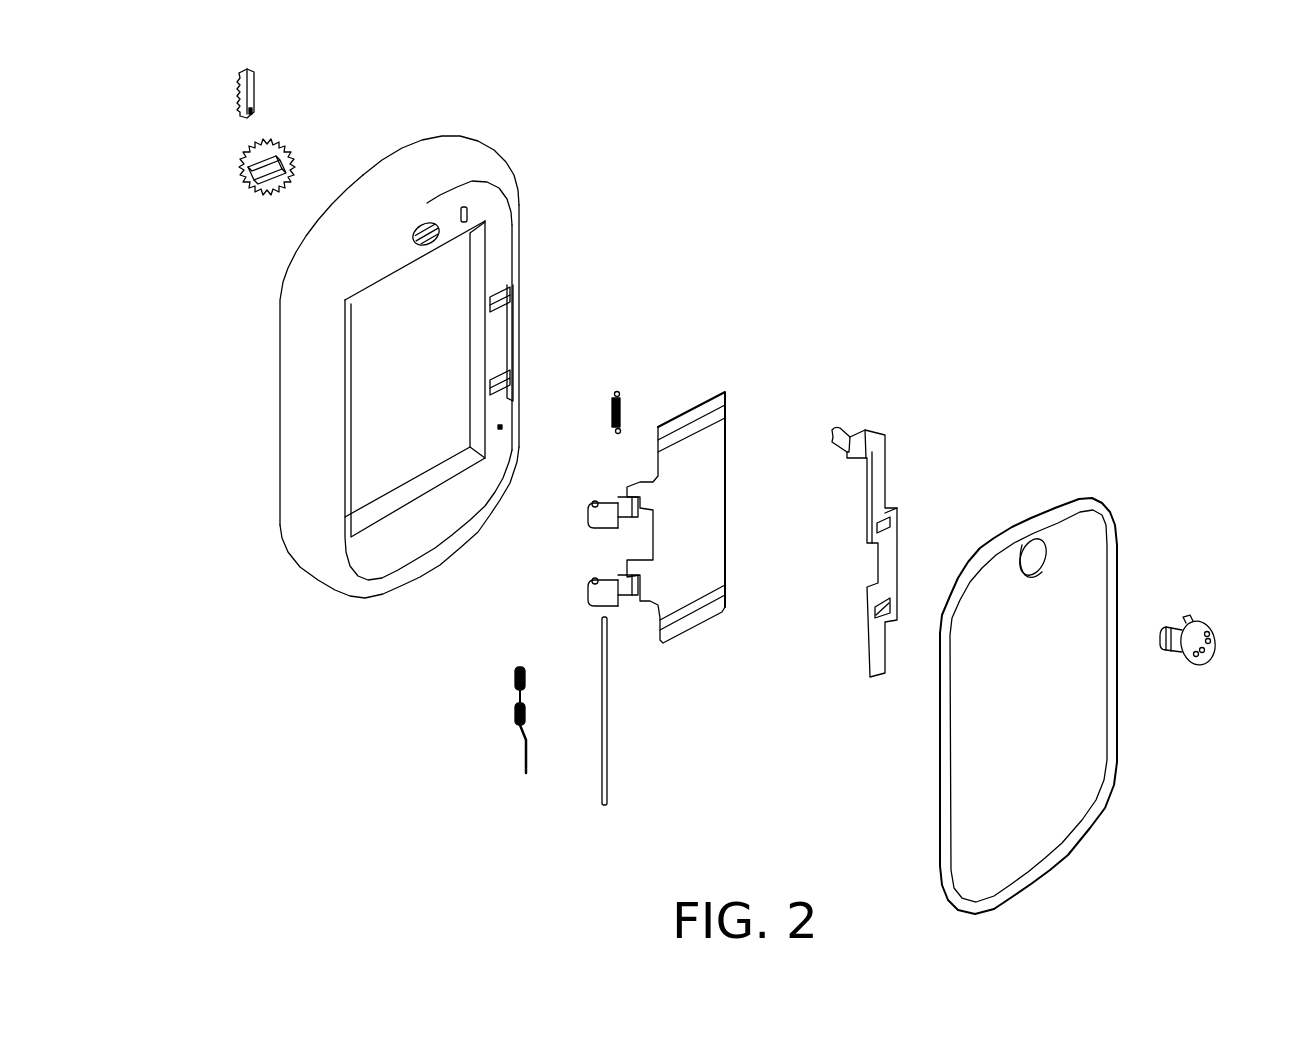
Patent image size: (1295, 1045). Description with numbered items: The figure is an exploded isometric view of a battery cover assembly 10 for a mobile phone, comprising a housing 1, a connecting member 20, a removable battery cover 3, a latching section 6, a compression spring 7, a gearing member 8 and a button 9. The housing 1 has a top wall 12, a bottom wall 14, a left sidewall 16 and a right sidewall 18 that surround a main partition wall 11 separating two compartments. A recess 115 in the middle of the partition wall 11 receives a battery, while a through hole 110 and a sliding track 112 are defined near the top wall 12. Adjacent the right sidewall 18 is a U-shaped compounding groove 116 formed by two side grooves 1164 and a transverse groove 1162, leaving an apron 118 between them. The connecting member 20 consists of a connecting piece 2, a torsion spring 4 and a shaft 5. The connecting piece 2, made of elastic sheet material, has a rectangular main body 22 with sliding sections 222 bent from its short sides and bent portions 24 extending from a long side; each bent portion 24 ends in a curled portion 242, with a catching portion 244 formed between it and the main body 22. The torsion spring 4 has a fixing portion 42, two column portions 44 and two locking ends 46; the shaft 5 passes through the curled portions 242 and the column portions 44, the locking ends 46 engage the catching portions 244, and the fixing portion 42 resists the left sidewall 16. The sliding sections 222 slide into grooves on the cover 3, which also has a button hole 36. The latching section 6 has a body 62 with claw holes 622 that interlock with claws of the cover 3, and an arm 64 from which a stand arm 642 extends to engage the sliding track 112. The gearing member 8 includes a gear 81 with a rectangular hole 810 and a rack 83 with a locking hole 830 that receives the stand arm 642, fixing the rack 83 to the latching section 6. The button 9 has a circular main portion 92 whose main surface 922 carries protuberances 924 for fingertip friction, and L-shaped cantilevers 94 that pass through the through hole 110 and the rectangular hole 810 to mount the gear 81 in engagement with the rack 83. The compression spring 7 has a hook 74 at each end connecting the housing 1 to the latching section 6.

The battery cover assembly 10 is at (678, 109).
The housing 1 is at (272, 482).
The main partition wall 11 is at (437, 510).
The top wall 12 is at (433, 172).
The bottom wall 14 is at (370, 582).
The left sidewall 16 is at (313, 304).
The right sidewall 18 is at (523, 232).
The through hole 110 is at (413, 245).
The sliding track 112 is at (469, 214).
The recess 115 is at (383, 398).
The U-shaped compounding groove 116 is at (628, 262).
The transverse groove 1162 is at (513, 328).
The side grooves 1164 is at (512, 292).
The apron 118 is at (497, 353).
The gearing member 8 is at (332, 93).
The gear 81 is at (283, 146).
The rectangular hole 810 is at (243, 178).
The rack 83 is at (262, 117).
The locking hole 830 is at (240, 113).
The compression spring 7 is at (615, 386).
The hooks 74 is at (617, 432).
The connecting member 20 is at (717, 847).
The connecting piece 2 is at (693, 647).
The main body 22 is at (713, 500).
The sliding sections 222 is at (708, 610).
The bent portions 24 is at (620, 527).
The curled portion 242 is at (592, 502).
The catching portion 244 is at (630, 598).
The torsion spring 4 is at (516, 775).
The fixing portion 42 is at (518, 690).
The column portions 44 is at (517, 722).
The locking ends 46 is at (525, 664).
The shaft 5 is at (597, 800).
The latching section 6 is at (904, 462).
The body 62 is at (888, 568).
The claw holes 622 is at (889, 524).
The arm 64 is at (866, 438).
The stand arm 642 is at (833, 432).
The removable battery cover 3 is at (1100, 489).
The button hole 36 is at (1033, 545).
The button 9 is at (1222, 628).
The main portion 92 is at (1190, 627).
The main surface 922 is at (1201, 658).
The protuberances 924 is at (1210, 646).
The L-shaped cantilevers 94 is at (1170, 642).